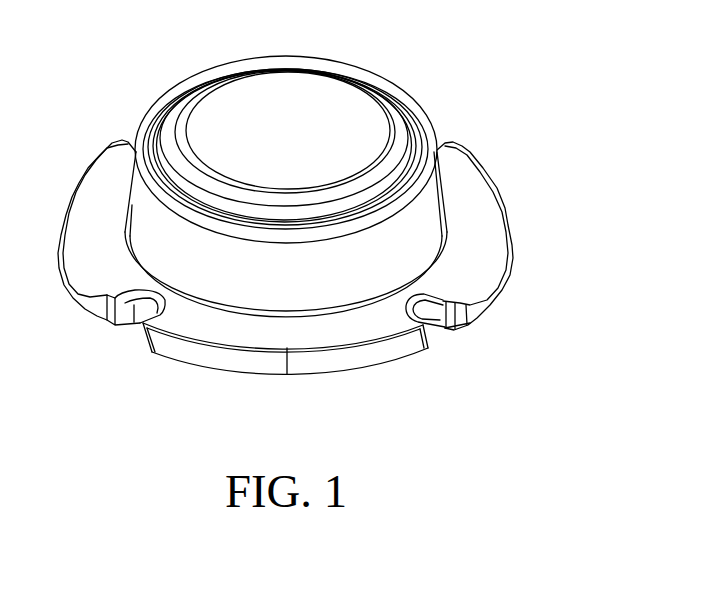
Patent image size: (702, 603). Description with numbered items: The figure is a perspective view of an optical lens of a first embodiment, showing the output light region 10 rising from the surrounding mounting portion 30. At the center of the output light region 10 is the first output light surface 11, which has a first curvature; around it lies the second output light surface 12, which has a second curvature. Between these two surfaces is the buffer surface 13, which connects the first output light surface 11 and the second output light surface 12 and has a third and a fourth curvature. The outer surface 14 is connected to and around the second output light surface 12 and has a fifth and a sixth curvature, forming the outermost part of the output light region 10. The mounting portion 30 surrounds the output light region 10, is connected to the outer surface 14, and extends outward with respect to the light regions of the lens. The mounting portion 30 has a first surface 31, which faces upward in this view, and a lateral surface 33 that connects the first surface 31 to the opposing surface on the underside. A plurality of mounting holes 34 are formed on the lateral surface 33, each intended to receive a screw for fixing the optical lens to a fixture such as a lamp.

The output light region 10 is at (556, 90).
The first output light surface 11 is at (348, 98).
The second output light surface 12 is at (413, 145).
The buffer surface 13 is at (388, 121).
The outer surface 14 is at (430, 203).
The mounting portion 30 is at (620, 238).
The first surface 31 is at (483, 254).
The lateral surface 33 is at (500, 273).
The mounting holes 34 is at (443, 337).